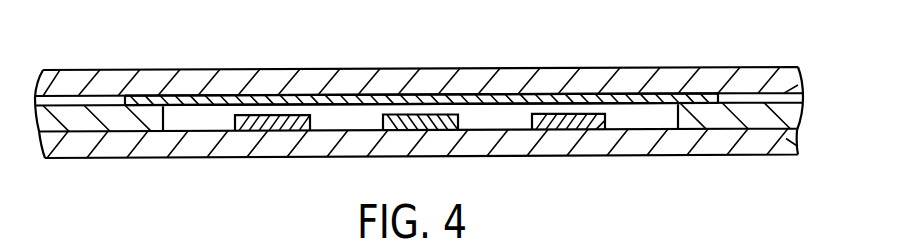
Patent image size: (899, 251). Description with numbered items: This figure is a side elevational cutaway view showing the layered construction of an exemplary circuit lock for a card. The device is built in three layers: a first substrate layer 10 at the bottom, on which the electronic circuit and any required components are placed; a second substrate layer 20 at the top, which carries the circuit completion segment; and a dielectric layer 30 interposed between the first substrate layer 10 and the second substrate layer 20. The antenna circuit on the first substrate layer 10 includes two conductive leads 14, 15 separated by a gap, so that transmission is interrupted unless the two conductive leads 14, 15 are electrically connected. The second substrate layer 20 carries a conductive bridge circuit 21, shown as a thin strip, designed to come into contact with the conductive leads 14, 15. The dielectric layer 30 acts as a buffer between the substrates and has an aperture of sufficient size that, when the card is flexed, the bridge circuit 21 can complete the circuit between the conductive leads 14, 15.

The first substrate layer 10 is at (798, 142).
The conductive lead 14 is at (422, 115).
The conductive lead 15 is at (567, 129).
The second substrate layer 20 is at (772, 66).
The conductive bridge circuit 21 is at (712, 95).
The dielectric layer 30 is at (803, 107).